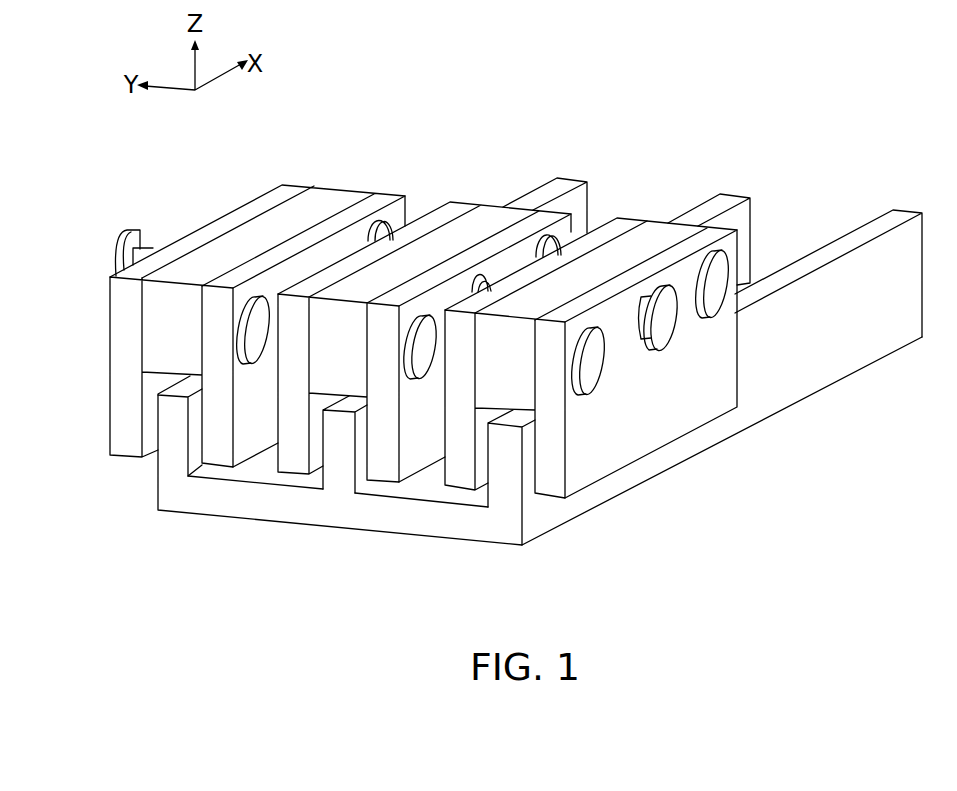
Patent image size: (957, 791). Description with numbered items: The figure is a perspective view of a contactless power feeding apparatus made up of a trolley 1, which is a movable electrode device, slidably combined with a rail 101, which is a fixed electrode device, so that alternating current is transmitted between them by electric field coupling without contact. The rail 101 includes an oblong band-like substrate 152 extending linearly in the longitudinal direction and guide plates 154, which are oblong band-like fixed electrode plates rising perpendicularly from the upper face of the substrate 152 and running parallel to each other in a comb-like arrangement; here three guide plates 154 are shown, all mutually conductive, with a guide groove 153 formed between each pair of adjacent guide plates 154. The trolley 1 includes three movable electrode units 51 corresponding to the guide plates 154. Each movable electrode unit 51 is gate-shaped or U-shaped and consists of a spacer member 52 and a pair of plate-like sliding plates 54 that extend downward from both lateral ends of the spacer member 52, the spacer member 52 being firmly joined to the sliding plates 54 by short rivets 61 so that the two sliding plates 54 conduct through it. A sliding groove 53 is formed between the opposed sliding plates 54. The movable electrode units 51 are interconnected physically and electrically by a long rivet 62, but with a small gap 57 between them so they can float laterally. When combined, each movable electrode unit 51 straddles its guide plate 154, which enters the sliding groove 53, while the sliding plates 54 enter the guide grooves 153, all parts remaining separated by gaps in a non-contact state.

The trolley 1 is at (358, 167).
The movable electrode unit 51 is at (333, 192).
The small gap 57 is at (413, 208).
The sliding plate 54 is at (609, 352).
The spacer member 52 is at (655, 228).
The short rivet 61 is at (717, 304).
The long rivet 62 is at (663, 335).
The rail 101 is at (853, 417).
The substrate 152 is at (400, 518).
The guide groove 153 is at (253, 468).
The sliding groove 53 is at (483, 418).
The guide plate 154 is at (860, 230).